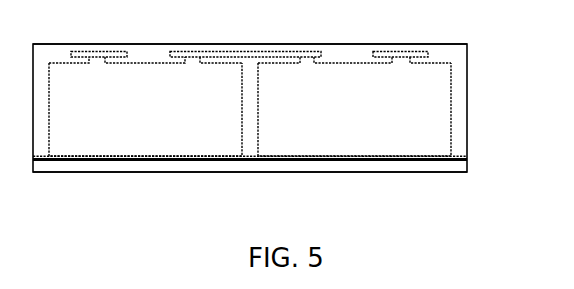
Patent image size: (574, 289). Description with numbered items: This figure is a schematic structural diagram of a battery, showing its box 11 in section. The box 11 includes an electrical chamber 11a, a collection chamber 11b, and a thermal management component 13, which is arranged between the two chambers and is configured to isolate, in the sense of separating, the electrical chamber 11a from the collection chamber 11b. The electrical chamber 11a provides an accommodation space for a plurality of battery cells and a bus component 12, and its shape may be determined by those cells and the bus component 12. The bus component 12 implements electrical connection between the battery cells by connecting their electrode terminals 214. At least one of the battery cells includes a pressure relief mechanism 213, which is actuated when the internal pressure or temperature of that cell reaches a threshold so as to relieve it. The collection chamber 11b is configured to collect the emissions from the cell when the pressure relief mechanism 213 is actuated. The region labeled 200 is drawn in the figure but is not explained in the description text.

The box 11 is at (160, 44).
The electrical chamber 11a is at (451, 54).
The collection chamber 11b is at (455, 170).
The bus component 12 is at (307, 50).
The thermal management component 13 is at (457, 155).
The chip/component regions 200 is at (442, 107).
The pressure relief mechanism 213 is at (140, 157).
The electrode terminals 214 is at (193, 59).